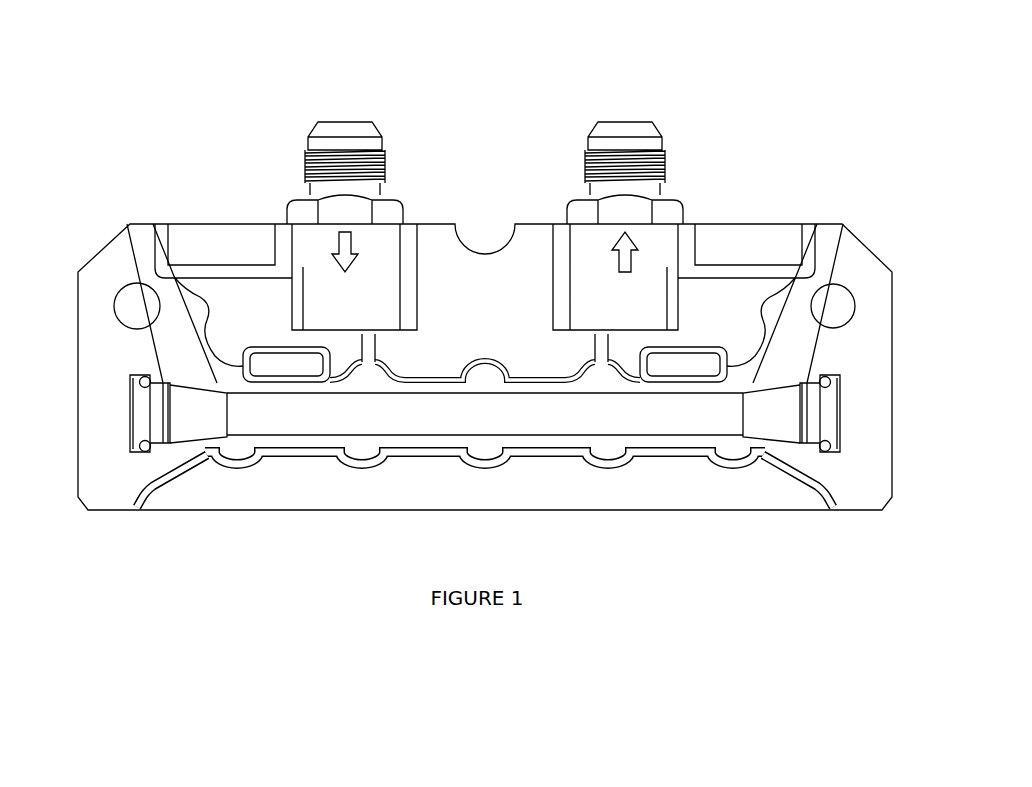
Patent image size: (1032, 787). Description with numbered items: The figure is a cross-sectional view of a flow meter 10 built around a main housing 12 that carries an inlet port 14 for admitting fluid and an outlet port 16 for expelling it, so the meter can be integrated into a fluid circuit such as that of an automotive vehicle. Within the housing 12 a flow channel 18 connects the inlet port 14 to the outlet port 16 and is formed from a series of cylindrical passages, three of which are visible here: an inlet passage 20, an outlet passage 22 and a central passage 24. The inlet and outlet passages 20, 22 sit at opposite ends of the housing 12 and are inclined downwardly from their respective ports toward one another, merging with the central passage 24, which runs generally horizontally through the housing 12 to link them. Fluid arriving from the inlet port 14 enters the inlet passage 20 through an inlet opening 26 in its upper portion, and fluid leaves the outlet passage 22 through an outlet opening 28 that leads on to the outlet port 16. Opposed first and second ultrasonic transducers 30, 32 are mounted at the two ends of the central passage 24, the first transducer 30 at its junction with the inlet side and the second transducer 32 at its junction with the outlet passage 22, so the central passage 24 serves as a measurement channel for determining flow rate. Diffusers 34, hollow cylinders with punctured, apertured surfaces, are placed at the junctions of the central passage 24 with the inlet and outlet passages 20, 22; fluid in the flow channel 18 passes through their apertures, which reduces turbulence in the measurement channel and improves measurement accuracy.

The flow meter 10 is at (100, 128).
The main housing 12 is at (300, 482).
The inlet port 14 is at (304, 115).
The outlet port 16 is at (693, 109).
The flow channel 18 is at (733, 453).
The inlet passage 20 is at (165, 353).
The outlet passage 22 is at (805, 362).
The central passage 24 is at (430, 425).
The inlet opening 26 is at (127, 300).
The outlet opening 28 is at (847, 303).
The first ultrasonic transducer 30 is at (142, 425).
The second ultrasonic transducer 32 is at (820, 423).
The diffuser 34 is at (198, 425).